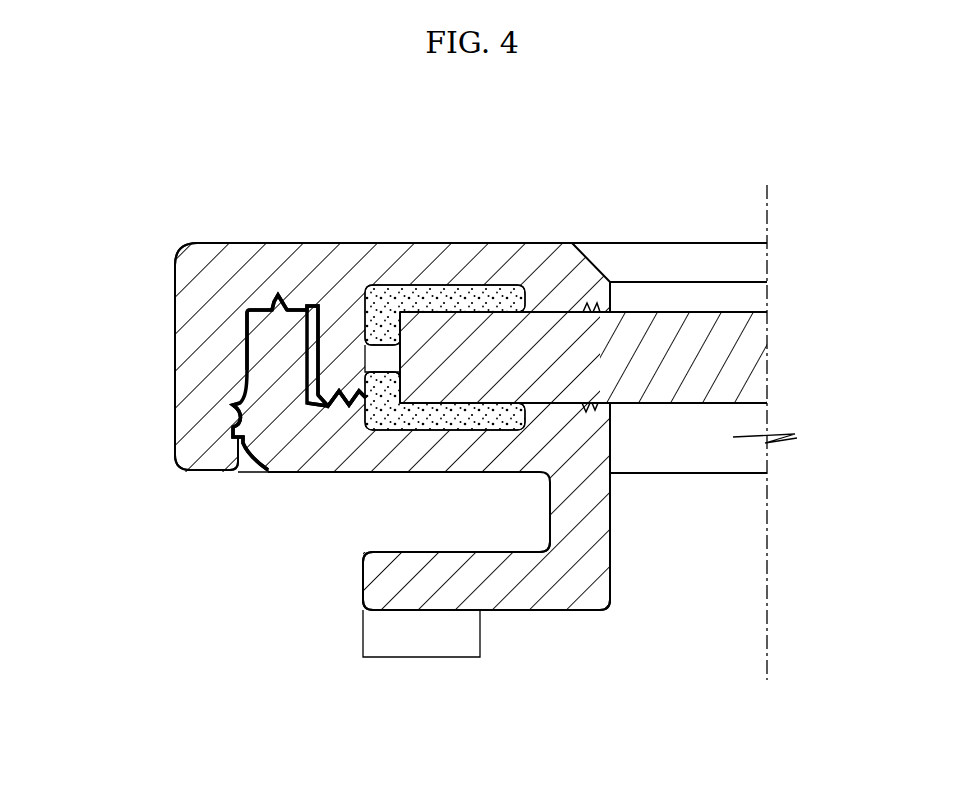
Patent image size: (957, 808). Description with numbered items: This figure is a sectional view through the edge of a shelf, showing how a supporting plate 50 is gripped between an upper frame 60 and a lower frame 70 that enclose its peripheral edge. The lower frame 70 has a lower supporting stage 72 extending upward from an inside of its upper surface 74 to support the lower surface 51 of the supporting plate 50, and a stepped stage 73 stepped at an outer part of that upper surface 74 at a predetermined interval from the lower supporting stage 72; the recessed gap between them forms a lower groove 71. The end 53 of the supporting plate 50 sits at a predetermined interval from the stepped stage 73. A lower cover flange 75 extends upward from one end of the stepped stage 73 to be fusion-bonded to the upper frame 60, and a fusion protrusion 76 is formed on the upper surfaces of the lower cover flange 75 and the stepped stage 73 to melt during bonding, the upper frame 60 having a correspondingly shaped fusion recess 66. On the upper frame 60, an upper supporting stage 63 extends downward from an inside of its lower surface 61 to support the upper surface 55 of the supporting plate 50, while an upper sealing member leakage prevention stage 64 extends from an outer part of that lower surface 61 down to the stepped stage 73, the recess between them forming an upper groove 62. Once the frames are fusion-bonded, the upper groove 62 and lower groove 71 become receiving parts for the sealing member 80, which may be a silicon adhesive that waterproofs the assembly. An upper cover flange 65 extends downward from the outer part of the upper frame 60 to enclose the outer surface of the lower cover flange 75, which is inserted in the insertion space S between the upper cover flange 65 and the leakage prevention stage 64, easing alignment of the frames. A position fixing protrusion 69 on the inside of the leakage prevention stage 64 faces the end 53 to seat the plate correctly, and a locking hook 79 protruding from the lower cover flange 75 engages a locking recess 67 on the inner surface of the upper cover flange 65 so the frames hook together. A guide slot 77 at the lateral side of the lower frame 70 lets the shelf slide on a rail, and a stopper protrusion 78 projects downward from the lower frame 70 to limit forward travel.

The supporting plate 50 is at (735, 360).
The lower surface of the supporting plate 51 is at (718, 404).
The end of the supporting plate 53 is at (410, 415).
The upper surface of the supporting plate 55 is at (713, 310).
The upper frame 60 is at (458, 251).
The lower surface of the upper frame 61 is at (430, 300).
The upper groove 62 is at (488, 300).
The upper supporting stage 63 is at (560, 320).
The upper sealing member leakage prevention stage 64 is at (322, 308).
The upper cover flange 65 is at (190, 380).
The fusion recess 66 is at (246, 302).
The locking recess 67 is at (235, 406).
The position fixing protrusion 69 is at (376, 500).
The lower frame 70 is at (535, 590).
The lower groove 71 is at (372, 422).
The lower supporting stage 72 is at (553, 403).
The stepped stage 73 is at (274, 398).
The upper surface of the lower frame 74 is at (494, 422).
The lower cover flange 75 is at (247, 345).
The fusion protrusion 76 is at (309, 302).
The guide slot 77 is at (535, 500).
The stopper protrusion 78 is at (418, 645).
The locking hook 79 is at (233, 428).
The sealing member 80 is at (390, 345).
The insertion space S is at (262, 473).